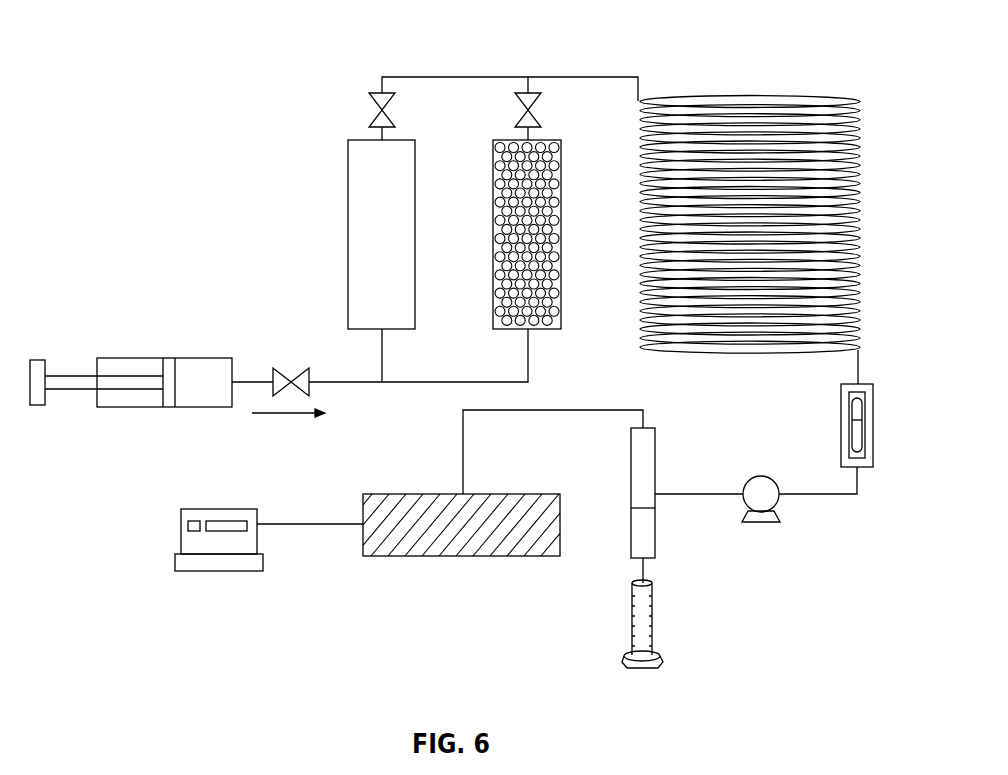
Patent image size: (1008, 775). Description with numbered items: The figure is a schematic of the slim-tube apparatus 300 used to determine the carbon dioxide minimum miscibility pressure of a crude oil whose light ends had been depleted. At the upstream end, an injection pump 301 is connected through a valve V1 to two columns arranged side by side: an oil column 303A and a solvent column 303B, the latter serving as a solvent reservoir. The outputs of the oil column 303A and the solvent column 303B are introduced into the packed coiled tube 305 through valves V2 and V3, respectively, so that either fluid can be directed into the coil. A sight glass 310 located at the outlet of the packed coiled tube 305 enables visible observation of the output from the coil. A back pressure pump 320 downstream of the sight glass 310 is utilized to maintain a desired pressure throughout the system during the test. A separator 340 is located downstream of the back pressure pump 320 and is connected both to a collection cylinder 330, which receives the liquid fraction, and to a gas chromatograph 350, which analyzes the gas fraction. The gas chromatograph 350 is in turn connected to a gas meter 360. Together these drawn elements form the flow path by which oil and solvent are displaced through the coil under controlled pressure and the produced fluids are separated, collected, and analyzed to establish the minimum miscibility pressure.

The slim-tube apparatus 300 is at (159, 74).
The injection pump 301 is at (122, 357).
The oil column 303A is at (340, 206).
The solvent column 303B is at (483, 178).
The packed coiled tube 305 is at (735, 100).
The sight glass 310 is at (841, 428).
The back pressure pump 320 is at (762, 522).
The collection cylinder 330 is at (655, 626).
The separator 340 is at (624, 482).
The gas chromatograph 350 is at (432, 556).
The gas meter 360 is at (220, 571).
The valve V1 is at (291, 369).
The valve V2 is at (364, 111).
The valve V3 is at (510, 111).